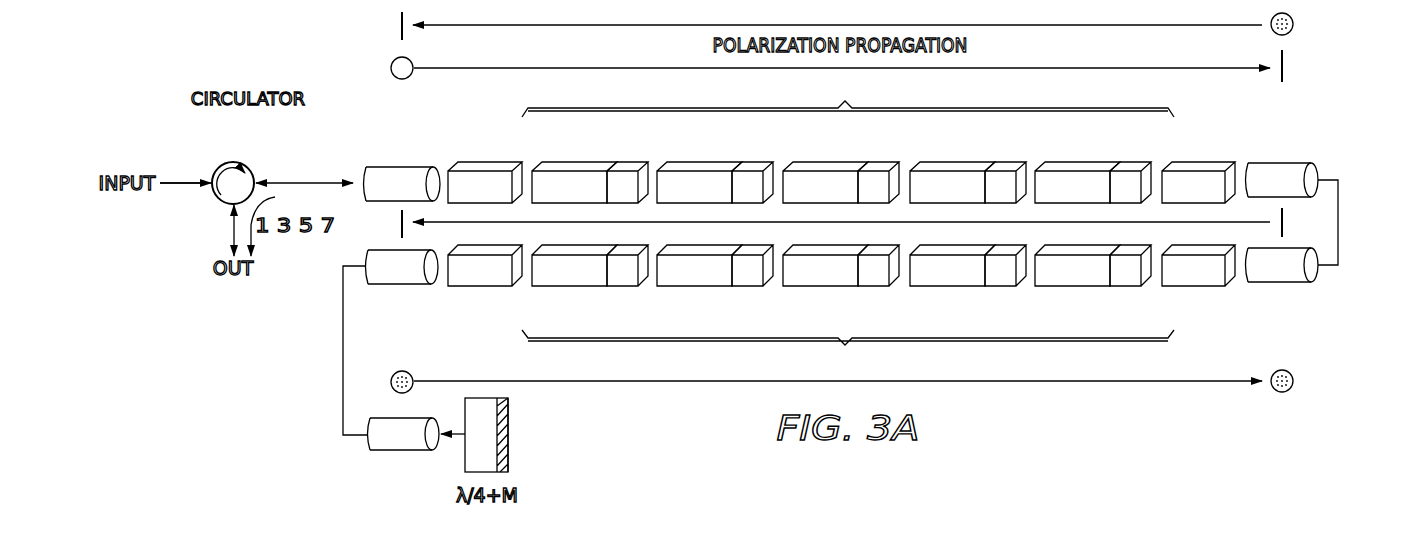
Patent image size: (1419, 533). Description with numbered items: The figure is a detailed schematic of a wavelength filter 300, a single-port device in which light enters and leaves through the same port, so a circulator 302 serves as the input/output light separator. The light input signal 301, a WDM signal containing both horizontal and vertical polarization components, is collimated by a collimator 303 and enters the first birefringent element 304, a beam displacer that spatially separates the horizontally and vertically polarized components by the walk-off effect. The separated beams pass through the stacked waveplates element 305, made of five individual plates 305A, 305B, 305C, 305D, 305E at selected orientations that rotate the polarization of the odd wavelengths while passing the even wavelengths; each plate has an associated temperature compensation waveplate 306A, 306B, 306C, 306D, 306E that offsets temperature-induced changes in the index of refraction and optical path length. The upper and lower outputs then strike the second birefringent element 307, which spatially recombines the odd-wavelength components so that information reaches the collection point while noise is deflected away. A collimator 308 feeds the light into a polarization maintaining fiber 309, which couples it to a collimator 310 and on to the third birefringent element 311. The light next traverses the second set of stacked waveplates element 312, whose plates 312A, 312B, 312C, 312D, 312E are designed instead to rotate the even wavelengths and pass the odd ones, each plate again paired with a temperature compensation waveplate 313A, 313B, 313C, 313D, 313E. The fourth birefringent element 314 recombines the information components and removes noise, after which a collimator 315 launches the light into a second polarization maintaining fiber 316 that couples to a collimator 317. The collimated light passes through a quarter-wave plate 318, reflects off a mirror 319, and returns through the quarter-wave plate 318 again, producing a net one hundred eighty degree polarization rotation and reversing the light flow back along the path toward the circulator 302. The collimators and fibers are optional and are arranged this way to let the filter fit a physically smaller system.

The wavelength filter 300 is at (195, 385).
The light input signal 301 is at (190, 181).
The circulator 302 is at (233, 162).
The collimator 303 is at (402, 165).
The first birefringent element 304 is at (486, 168).
The stacked waveplates element 305 is at (848, 96).
The waveplate 305A is at (562, 168).
The waveplate 305B is at (687, 168).
The waveplate 305C is at (813, 168).
The waveplate 305D is at (940, 168).
The waveplate 305E is at (1065, 166).
The temperature compensation waveplate 306A is at (625, 168).
The temperature compensation waveplate 306B is at (750, 168).
The temperature compensation waveplate 306C is at (876, 168).
The temperature compensation waveplate 306D is at (1003, 166).
The temperature compensation waveplate 306E is at (1128, 166).
The second birefringent element 307 is at (1200, 166).
The collimator 308 is at (1282, 165).
The fiber 309 is at (1340, 222).
The collimator 310 is at (1283, 282).
The third birefringent element 311 is at (1200, 283).
The second set of stacked waveplates element 312 is at (848, 351).
The waveplate 312A is at (1066, 283).
The waveplate 312B is at (941, 283).
The waveplate 312C is at (814, 283).
The waveplate 312D is at (688, 283).
The waveplate 312E is at (563, 283).
The temperature compensation waveplate 313A is at (1129, 283).
The temperature compensation waveplate 313B is at (1004, 283).
The temperature compensation waveplate 313C is at (877, 283).
The temperature compensation waveplate 313D is at (751, 283).
The temperature compensation waveplate 313E is at (626, 283).
The fourth birefringent element 314 is at (486, 283).
The collimator 315 is at (402, 285).
The fiber 316 is at (343, 350).
The collimator 317 is at (382, 453).
The quarter-wave plate 318 is at (470, 458).
The mirror 319 is at (511, 436).